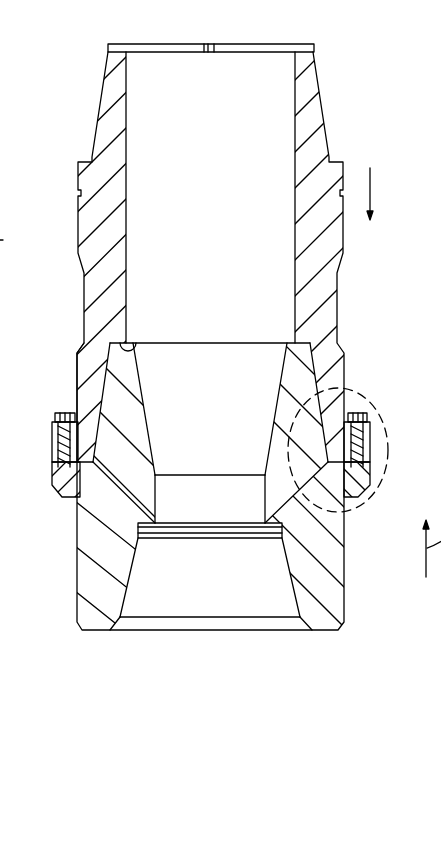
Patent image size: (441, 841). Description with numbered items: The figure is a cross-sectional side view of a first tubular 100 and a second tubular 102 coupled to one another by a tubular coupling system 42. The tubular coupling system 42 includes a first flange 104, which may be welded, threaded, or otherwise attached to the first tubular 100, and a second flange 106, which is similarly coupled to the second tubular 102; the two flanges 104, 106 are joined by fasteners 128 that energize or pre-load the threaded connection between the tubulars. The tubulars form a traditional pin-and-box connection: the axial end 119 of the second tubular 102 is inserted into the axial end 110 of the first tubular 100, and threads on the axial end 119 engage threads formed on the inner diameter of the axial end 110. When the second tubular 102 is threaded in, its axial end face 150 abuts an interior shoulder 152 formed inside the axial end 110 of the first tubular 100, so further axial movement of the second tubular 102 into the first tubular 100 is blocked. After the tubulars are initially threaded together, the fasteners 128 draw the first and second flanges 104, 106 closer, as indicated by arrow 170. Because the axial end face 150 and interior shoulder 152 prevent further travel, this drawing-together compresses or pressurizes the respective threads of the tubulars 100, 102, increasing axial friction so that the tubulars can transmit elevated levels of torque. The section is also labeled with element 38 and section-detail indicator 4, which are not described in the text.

The first tubular 100 is at (220, 420).
The housing 38 is at (220, 350).
The second tubular 102 is at (348, 592).
The first flange 104 is at (220, 473).
The second flange 106 is at (366, 498).
The axial end of the first tubular 110 is at (47, 370).
The axial end of the second tubular 119 is at (220, 450).
The fasteners 128 is at (366, 419).
The axial end face 150 is at (131, 338).
The interior shoulder 152 is at (296, 306).
The arrow 170 is at (370, 185).
The tubular coupling system 42 is at (220, 350).
The section detail line 4 is at (378, 388).